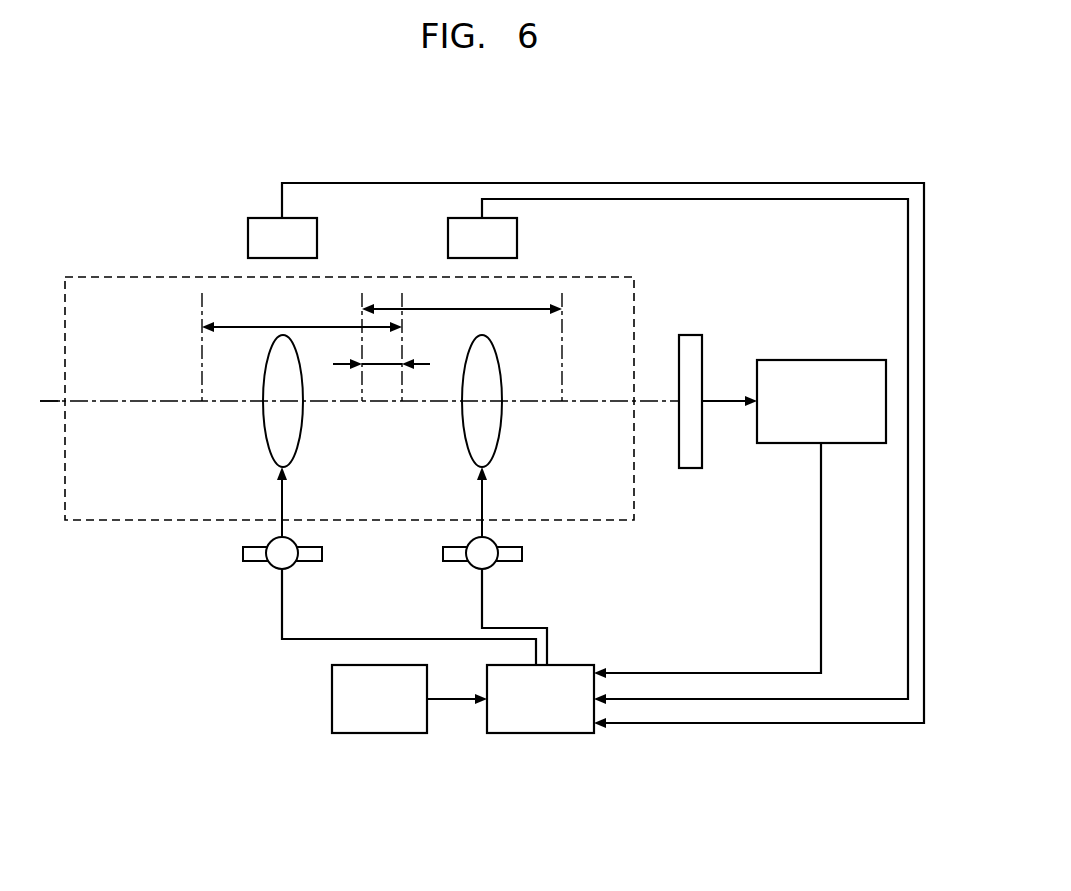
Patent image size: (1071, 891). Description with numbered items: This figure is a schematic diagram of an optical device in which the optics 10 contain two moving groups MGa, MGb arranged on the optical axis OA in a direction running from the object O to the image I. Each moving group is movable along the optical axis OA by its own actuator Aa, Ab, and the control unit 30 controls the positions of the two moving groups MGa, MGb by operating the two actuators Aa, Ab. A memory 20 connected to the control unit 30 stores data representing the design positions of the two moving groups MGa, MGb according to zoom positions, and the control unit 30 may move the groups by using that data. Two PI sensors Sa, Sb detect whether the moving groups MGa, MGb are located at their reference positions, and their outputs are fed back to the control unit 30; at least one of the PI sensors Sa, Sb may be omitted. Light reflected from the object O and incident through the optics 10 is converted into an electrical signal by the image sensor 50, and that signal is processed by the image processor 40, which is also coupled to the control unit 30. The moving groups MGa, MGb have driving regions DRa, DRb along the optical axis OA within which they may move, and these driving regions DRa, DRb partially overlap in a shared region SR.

The optics 10 is at (593, 277).
The memory 20 is at (378, 735).
The control unit 30 is at (539, 735).
The image processor 40 is at (821, 360).
The image sensor 50 is at (702, 350).
The PI sensor Sa is at (248, 240).
The PI sensor Sb is at (448, 240).
The moving group MGa is at (267, 447).
The moving group MGb is at (466, 447).
The actuator Aa is at (312, 562).
The actuator Ab is at (512, 562).
The optical axis OA is at (137, 398).
The object O is at (39, 403).
The image I is at (709, 413).
The driving region DRa is at (302, 347).
The driving region DRb is at (462, 341).
The shared region SR is at (381, 353).